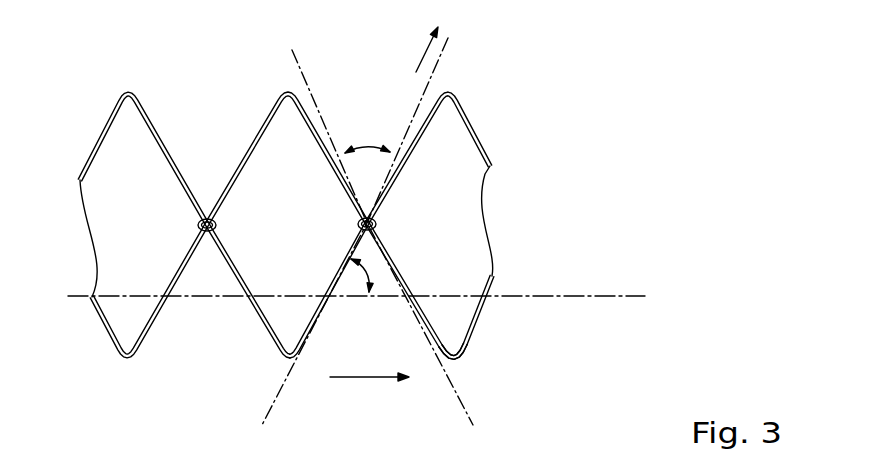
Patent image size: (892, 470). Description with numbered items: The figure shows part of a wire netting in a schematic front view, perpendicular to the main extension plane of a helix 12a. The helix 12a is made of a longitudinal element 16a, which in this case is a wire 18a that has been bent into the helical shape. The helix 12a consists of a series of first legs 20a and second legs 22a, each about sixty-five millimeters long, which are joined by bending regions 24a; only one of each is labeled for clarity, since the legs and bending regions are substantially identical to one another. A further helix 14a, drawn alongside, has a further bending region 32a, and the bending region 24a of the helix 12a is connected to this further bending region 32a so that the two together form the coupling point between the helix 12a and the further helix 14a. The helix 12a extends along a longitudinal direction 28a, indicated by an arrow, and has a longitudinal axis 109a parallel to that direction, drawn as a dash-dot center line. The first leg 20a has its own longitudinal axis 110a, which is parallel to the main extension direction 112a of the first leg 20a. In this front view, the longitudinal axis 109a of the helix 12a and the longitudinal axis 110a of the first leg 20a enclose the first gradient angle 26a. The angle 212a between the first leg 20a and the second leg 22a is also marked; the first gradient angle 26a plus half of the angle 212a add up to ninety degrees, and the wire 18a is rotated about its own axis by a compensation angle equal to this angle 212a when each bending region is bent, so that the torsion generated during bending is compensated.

The helix 12a is at (356, 234).
The further helix 14a is at (468, 125).
The longitudinal element 16a is at (470, 340).
The wire 18a is at (453, 351).
The first leg 20a is at (326, 282).
The second leg 22a is at (398, 286).
The bending region 24a is at (377, 210).
The first gradient angle 26a is at (392, 258).
The longitudinal direction 28a is at (370, 378).
The further bending region 32a is at (381, 243).
The longitudinal axis 109a is at (632, 295).
The longitudinal axis 110a is at (441, 60).
The main extension direction 112a is at (424, 50).
The angle 212a is at (367, 146).